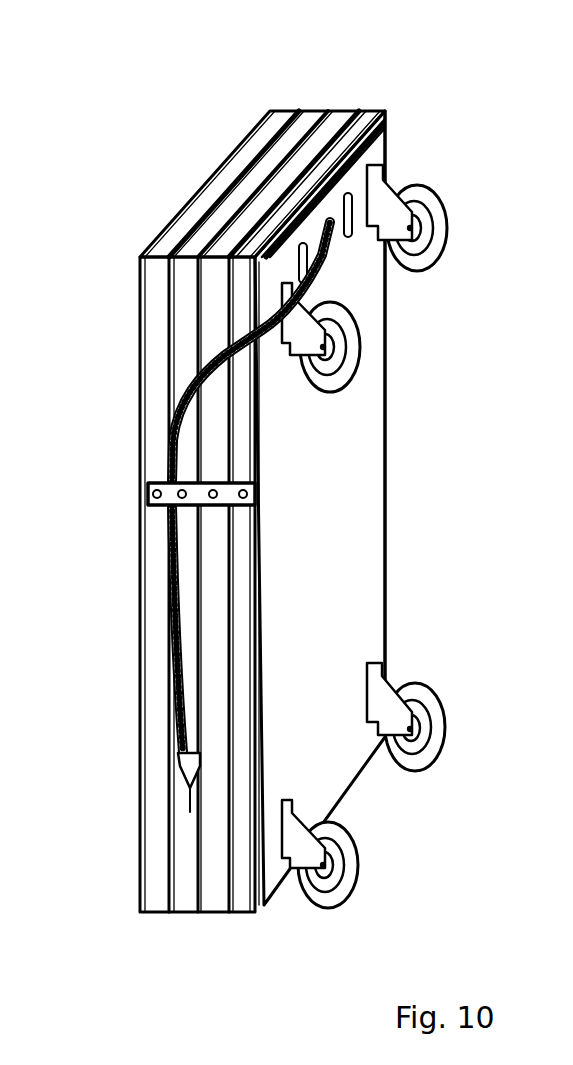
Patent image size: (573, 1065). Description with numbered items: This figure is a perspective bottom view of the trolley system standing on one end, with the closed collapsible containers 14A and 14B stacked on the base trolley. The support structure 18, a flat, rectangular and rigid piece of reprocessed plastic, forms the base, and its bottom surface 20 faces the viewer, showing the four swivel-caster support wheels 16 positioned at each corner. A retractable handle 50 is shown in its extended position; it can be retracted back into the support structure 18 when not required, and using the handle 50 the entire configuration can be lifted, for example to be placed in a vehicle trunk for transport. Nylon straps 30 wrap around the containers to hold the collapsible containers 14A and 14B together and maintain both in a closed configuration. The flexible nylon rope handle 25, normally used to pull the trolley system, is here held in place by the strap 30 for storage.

The first collapsible transport container 14A is at (213, 898).
The closed collapsible container 14B is at (170, 223).
The swivel-caster support wheels 16 is at (437, 257).
The support structure 18 is at (383, 130).
The bottom surface 20 is at (323, 521).
The rope handle 25 is at (168, 428).
The nylon straps 30 is at (155, 505).
The retractable handle 50 is at (325, 130).